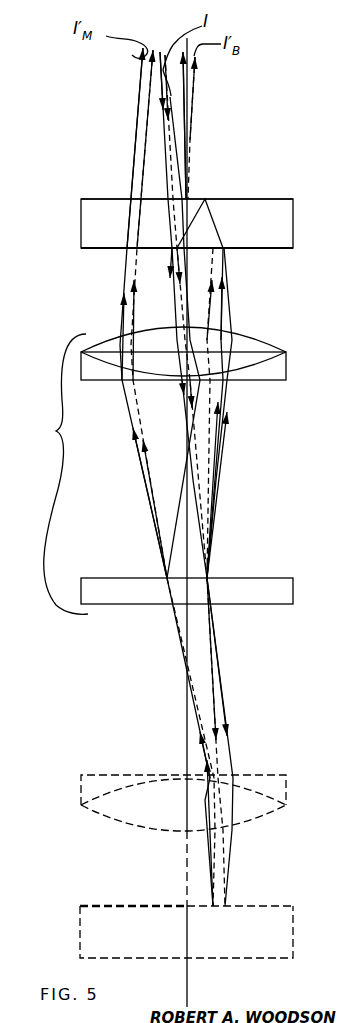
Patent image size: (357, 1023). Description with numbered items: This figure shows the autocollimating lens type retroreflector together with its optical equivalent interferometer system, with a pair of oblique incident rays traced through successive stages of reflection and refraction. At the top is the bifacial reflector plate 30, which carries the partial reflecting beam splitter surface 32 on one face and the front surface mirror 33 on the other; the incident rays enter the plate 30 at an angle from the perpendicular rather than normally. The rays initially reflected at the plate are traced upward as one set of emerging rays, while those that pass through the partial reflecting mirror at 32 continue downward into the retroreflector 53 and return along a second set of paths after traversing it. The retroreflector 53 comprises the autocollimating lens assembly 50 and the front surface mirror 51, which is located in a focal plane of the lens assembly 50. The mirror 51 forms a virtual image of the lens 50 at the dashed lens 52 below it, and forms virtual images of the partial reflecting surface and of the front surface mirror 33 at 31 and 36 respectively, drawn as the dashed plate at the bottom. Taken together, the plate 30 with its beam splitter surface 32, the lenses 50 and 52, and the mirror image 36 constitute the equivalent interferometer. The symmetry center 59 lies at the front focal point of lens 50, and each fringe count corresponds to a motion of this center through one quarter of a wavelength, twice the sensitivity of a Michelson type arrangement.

The bifacial reflector plate 30 is at (233, 210).
The partial reflecting beam splitter surface 32 is at (100, 250).
The front surface mirror 33 is at (258, 249).
The autocollimating lens assembly 50 is at (250, 334).
The front surface mirror 51 is at (224, 578).
The virtual image of the lens 52 is at (289, 767).
The retroreflector 53 is at (55, 431).
The symmetry center 59 is at (189, 136).
The object plate portion 31 is at (148, 889).
The virtual image of the front surface mirror 36 is at (277, 890).